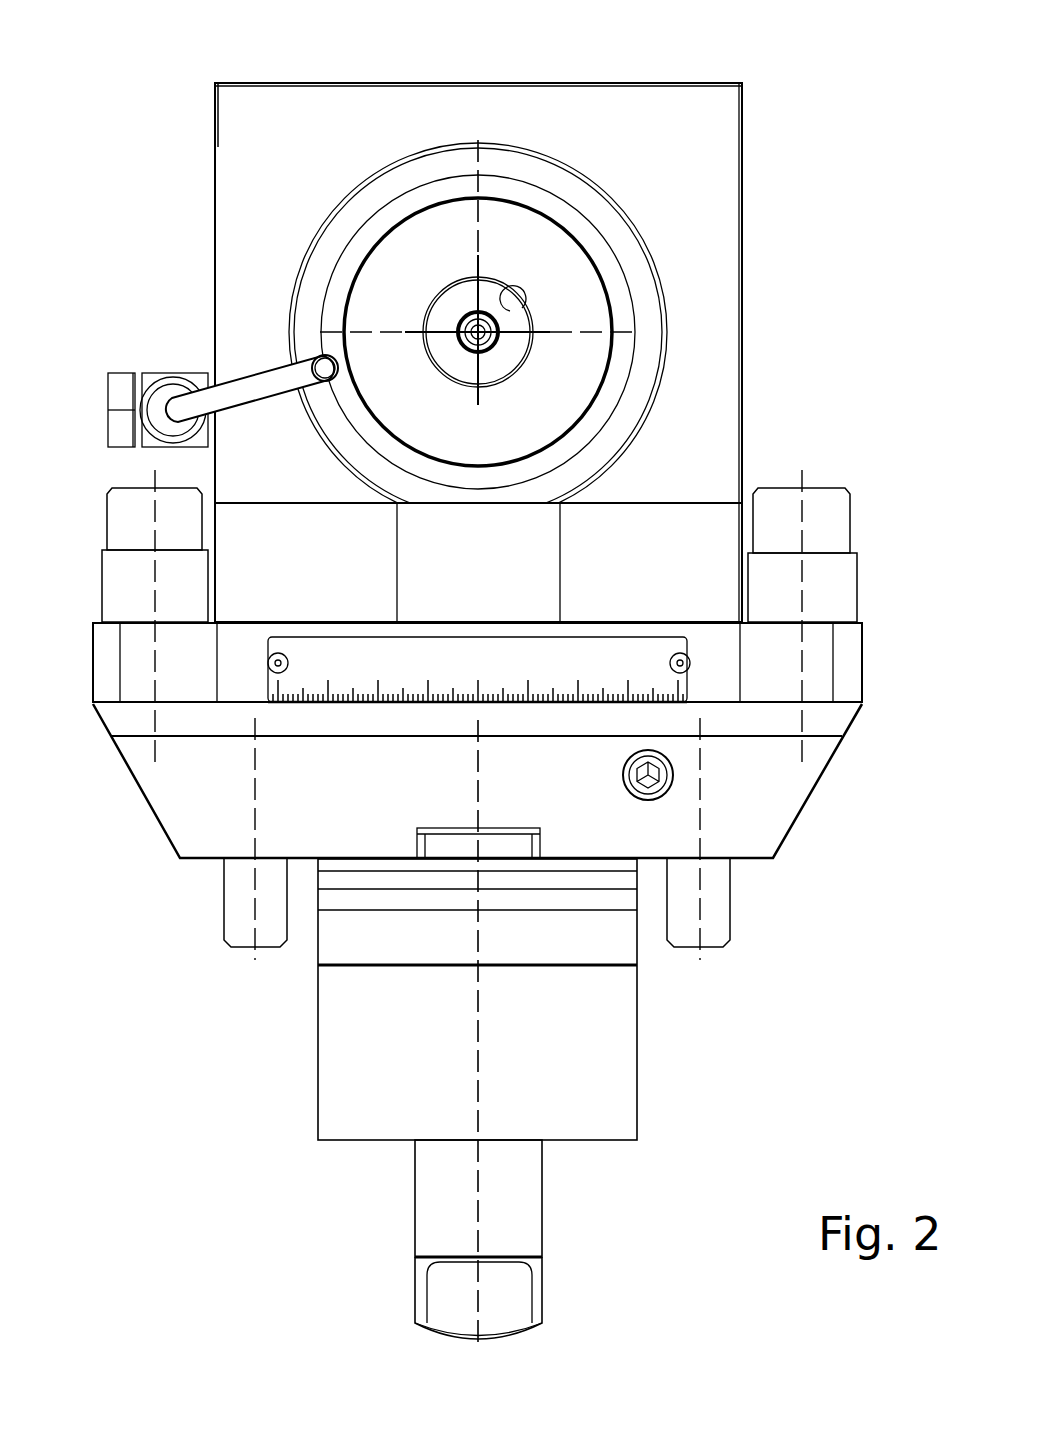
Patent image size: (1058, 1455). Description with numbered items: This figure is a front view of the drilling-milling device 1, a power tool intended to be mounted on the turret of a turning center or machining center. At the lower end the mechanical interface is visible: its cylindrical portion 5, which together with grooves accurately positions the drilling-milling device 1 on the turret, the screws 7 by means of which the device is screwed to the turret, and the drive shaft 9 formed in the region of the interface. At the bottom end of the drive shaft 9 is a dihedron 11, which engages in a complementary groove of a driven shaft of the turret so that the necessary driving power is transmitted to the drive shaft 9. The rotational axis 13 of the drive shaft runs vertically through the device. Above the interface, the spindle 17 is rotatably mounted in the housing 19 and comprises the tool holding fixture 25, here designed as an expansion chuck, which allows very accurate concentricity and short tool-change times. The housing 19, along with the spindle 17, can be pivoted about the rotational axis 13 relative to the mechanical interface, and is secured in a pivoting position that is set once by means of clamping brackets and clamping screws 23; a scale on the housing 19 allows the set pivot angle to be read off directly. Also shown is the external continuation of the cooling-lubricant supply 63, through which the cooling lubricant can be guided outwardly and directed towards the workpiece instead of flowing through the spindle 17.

The drilling-milling device 1 is at (793, 266).
The cylindrical portion 5 is at (637, 1050).
The screws 7 is at (222, 910).
The drive shaft 9 is at (543, 1200).
The dihedron 11 is at (485, 1310).
The rotational axis 13 is at (478, 1077).
The spindle 17 is at (570, 308).
The housing 19 is at (742, 398).
The clamping screws 23 is at (125, 523).
The tool holding fixture 25 is at (528, 306).
The external continuation of the cooling-lubricant supply 63 is at (253, 383).